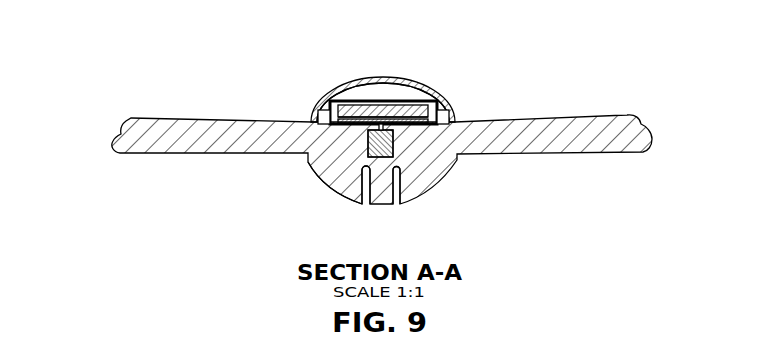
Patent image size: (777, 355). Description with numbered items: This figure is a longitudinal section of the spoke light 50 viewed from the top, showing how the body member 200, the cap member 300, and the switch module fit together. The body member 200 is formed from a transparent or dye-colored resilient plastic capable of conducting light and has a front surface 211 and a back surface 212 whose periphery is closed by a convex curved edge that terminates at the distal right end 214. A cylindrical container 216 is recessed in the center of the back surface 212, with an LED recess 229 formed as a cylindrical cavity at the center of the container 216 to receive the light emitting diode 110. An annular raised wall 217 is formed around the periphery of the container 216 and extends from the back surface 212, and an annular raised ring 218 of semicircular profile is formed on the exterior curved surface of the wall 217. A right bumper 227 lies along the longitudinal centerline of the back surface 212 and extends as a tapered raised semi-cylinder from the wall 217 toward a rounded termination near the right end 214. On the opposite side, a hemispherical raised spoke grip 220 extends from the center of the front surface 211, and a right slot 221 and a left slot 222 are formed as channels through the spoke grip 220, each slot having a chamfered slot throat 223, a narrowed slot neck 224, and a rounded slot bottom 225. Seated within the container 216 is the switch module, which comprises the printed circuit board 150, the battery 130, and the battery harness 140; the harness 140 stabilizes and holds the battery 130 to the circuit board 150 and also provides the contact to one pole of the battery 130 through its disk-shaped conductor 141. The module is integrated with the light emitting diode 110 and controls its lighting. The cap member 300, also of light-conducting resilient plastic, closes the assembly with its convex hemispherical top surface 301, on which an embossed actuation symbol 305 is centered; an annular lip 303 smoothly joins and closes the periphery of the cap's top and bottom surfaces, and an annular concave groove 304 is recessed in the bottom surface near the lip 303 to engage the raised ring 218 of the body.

The spoke light 50 is at (167, 66).
The body member 200 is at (573, 171).
The distal right end 214 is at (110, 140).
The right bumper 227 is at (162, 118).
The back surface 212 is at (292, 122).
The printed circuit board 150 is at (292, 151).
The light emitting diode 110 is at (312, 160).
The front surface 211 is at (598, 155).
The cylindrical container 216 is at (430, 132).
The LED recess 229 is at (342, 168).
The spoke grip 220 is at (348, 200).
The left slot 222 is at (365, 209).
The right slot 221 is at (397, 209).
The chamfered slot throat 223 is at (400, 182).
The narrowed slot neck 224 is at (401, 203).
The rounded slot bottom 225 is at (401, 172).
The cap member 300 is at (423, 72).
The convex hemispherical top surface 301 is at (432, 95).
The annular lip 303 is at (312, 117).
The battery 130 is at (337, 107).
The embossed actuation symbol 305 is at (379, 78).
The disk-shaped conductor 141 is at (350, 100).
The battery harness 140 is at (346, 100).
The annular raised wall 217 is at (440, 102).
The annular raised ring 218 is at (443, 107).
The annular concave groove 304 is at (450, 110).